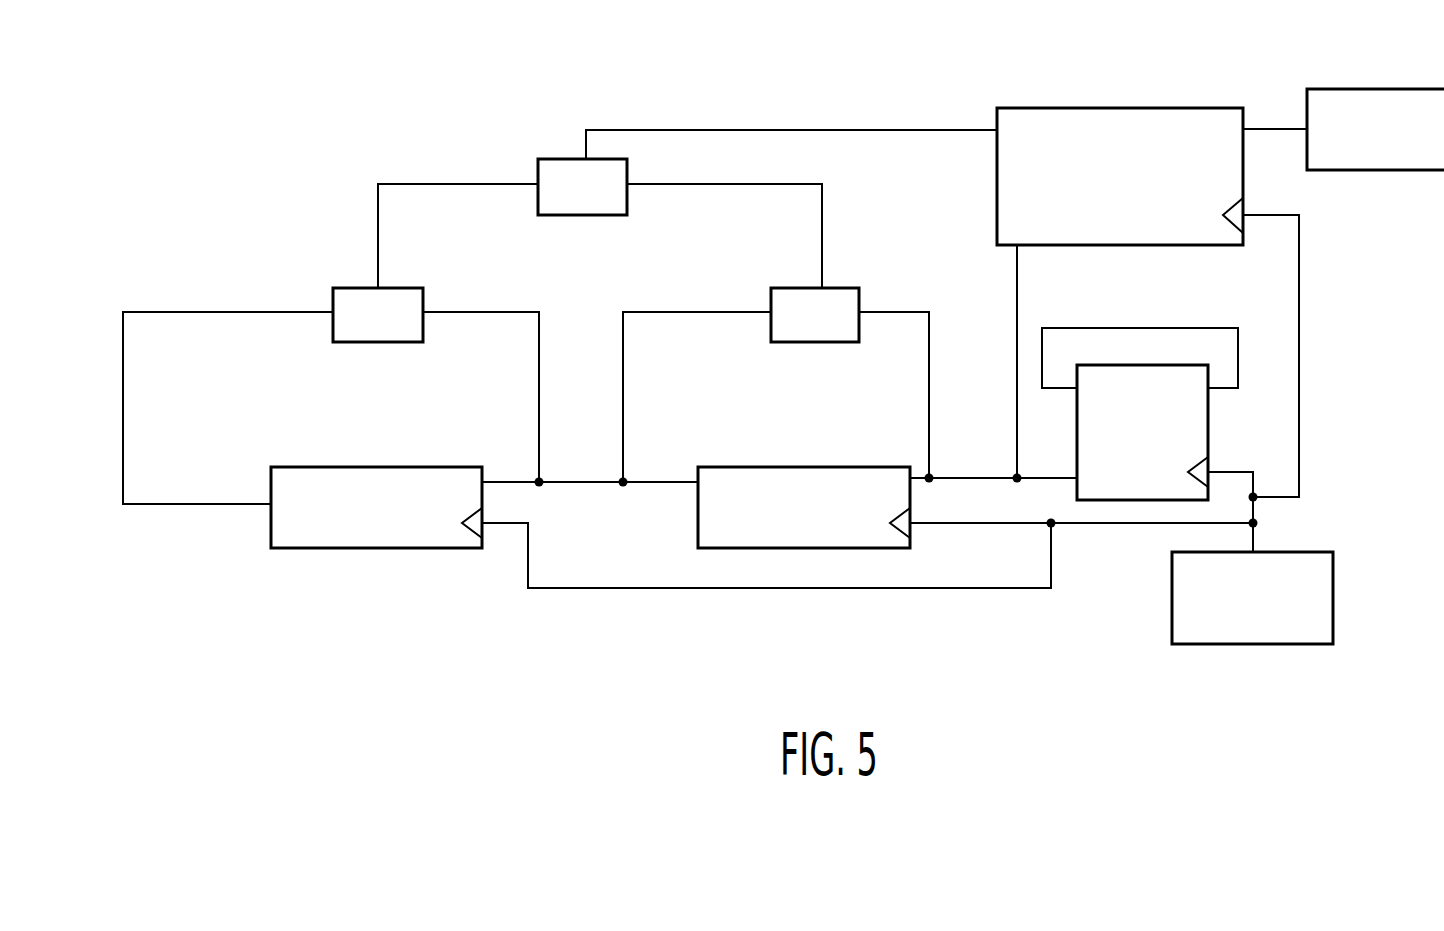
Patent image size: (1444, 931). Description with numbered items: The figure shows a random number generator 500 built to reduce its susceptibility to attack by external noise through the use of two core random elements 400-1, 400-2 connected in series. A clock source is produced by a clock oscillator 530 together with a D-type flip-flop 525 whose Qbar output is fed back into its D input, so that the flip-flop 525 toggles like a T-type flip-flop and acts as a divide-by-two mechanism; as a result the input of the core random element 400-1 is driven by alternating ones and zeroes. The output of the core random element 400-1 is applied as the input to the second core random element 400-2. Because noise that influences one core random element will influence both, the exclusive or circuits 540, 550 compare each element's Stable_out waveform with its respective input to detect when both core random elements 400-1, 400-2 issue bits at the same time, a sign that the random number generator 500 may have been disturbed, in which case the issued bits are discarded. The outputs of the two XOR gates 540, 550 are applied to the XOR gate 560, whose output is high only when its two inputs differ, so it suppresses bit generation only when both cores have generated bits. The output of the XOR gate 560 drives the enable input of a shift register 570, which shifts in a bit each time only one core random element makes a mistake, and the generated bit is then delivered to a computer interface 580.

The random number generator 500 is at (232, 168).
The exclusive or (XOR) circuit 550 is at (362, 288).
The XOR gate 560 is at (622, 159).
The exclusive or (XOR) circuit 540 is at (825, 342).
The shift register 570 is at (1101, 108).
The computer interface 580 is at (1343, 170).
The core random element 400-1 is at (398, 467).
The core random element 400-2 is at (765, 467).
The D-type flip-flop 525 is at (1208, 446).
The clock oscillator 530 is at (1172, 604).